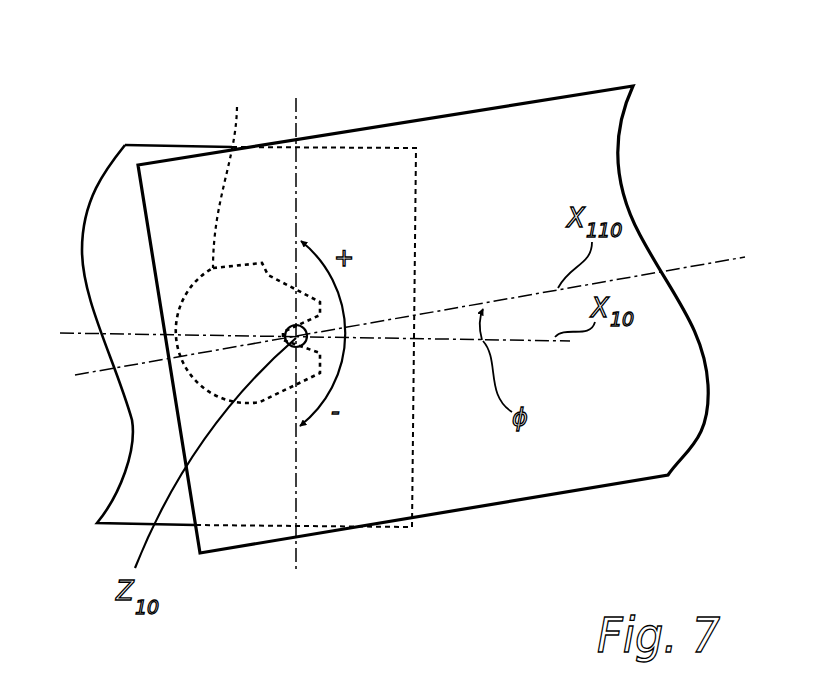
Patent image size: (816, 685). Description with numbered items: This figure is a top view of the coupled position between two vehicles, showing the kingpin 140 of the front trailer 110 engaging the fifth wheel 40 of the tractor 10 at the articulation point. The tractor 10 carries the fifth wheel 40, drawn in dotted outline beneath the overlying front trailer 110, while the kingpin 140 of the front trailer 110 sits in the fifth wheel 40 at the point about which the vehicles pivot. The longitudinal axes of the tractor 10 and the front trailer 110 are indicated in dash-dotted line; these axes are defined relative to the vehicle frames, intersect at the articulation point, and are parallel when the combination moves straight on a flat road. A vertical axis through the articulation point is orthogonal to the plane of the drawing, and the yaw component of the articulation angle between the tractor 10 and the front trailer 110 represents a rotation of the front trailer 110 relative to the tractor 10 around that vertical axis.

The tractor 10 is at (108, 198).
The fifth wheel 40 is at (248, 239).
The front trailer 110 is at (523, 117).
The kingpin 140 is at (305, 342).